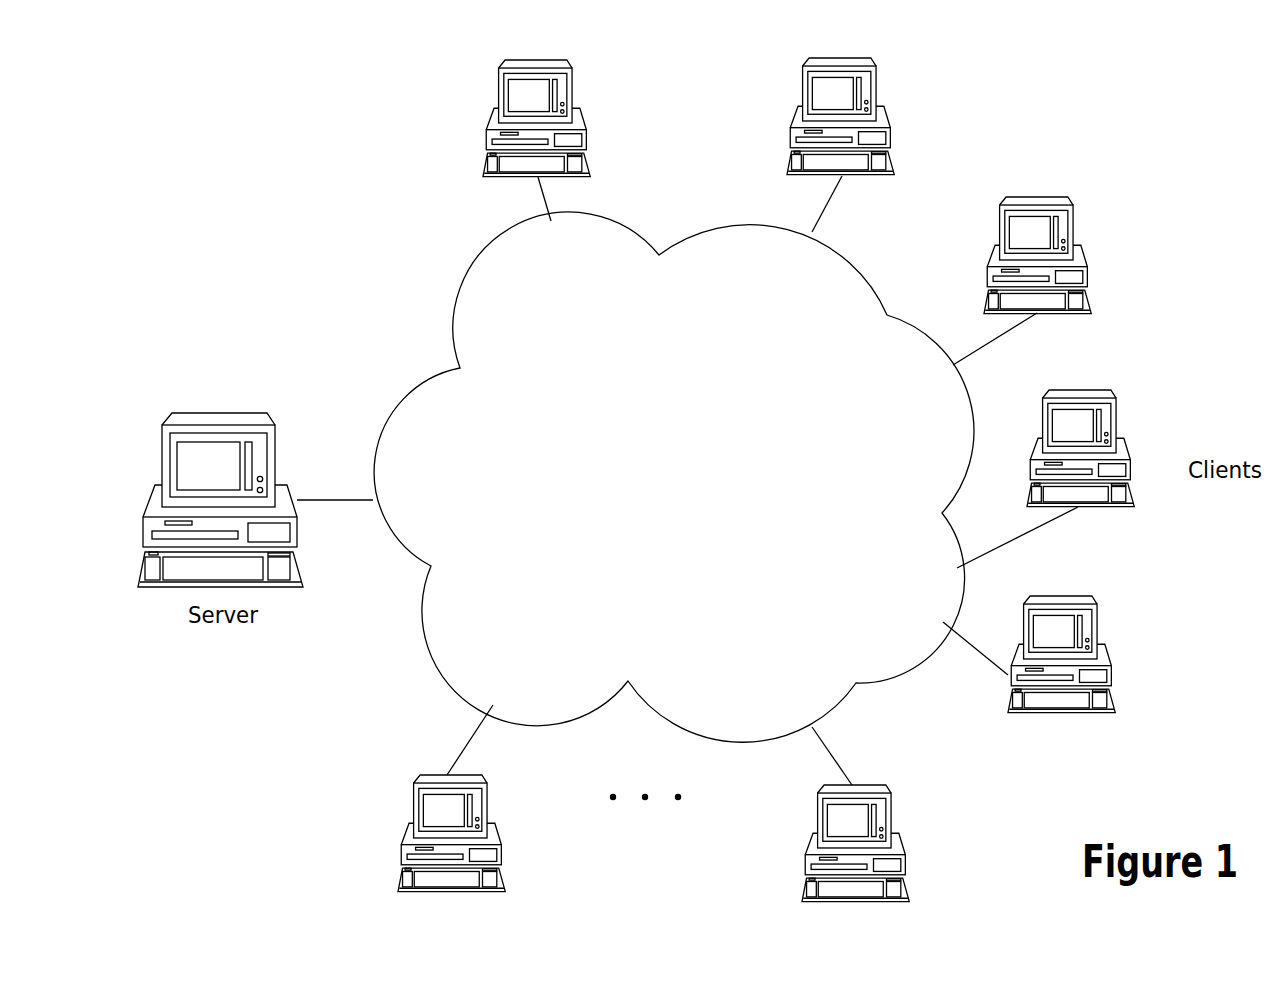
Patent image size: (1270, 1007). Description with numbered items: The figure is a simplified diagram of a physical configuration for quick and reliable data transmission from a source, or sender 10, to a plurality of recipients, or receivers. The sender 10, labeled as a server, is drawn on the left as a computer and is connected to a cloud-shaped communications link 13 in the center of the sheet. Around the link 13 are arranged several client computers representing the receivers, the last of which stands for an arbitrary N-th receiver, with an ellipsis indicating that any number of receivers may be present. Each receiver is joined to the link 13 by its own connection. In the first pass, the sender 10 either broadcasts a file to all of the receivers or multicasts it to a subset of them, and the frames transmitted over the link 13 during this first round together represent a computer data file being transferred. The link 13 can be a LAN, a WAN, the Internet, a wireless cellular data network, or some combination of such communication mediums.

The sender 10 is at (276, 433).
The communications link 13 is at (688, 482).